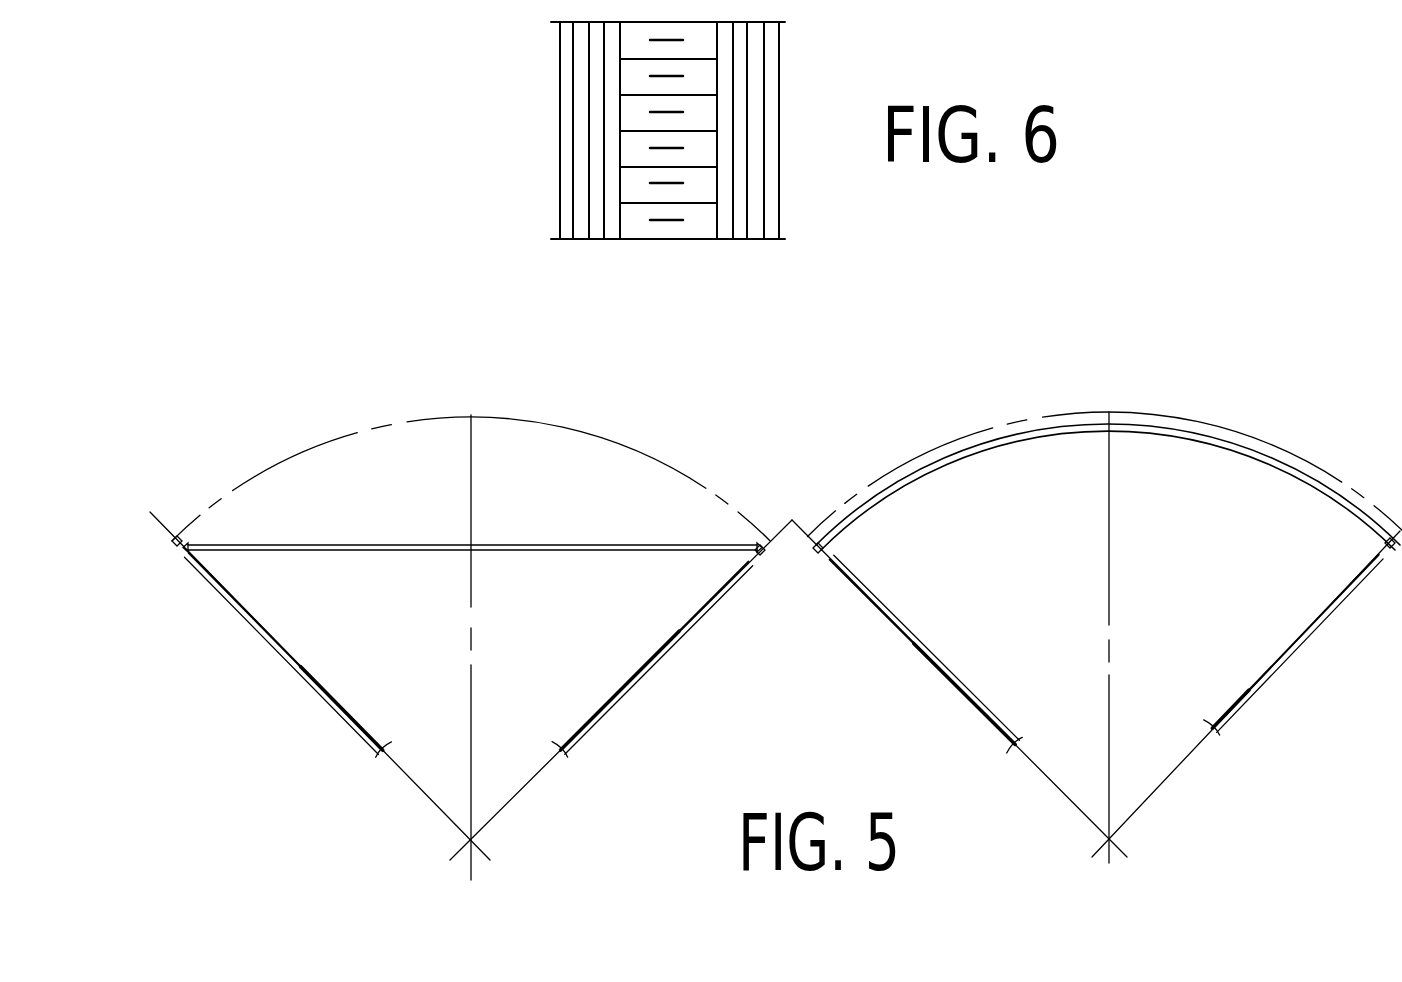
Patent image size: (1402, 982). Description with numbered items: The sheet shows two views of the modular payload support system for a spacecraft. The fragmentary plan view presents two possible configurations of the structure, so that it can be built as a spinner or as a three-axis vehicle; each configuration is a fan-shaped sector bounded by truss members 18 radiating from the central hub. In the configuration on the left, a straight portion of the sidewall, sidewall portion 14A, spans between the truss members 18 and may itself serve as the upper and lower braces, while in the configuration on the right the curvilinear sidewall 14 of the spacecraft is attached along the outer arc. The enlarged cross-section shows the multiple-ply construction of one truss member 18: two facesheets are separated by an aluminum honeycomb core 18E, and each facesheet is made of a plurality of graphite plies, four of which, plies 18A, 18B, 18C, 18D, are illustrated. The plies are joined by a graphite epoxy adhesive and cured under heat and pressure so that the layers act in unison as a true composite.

In FIG. 5, the sidewall 14 is at (1172, 433).
In FIG. 5, the sidewall portion 14A is at (552, 543).
In FIG. 5, the truss member 18 is at (322, 700).
In FIG. 6, the ply 18A is at (567, 240).
In FIG. 6, the ply 18B is at (578, 240).
In FIG. 6, the ply 18C is at (591, 240).
In FIG. 6, the ply 18D is at (607, 240).
In FIG. 6, the aluminum honeycomb core 18E is at (698, 240).